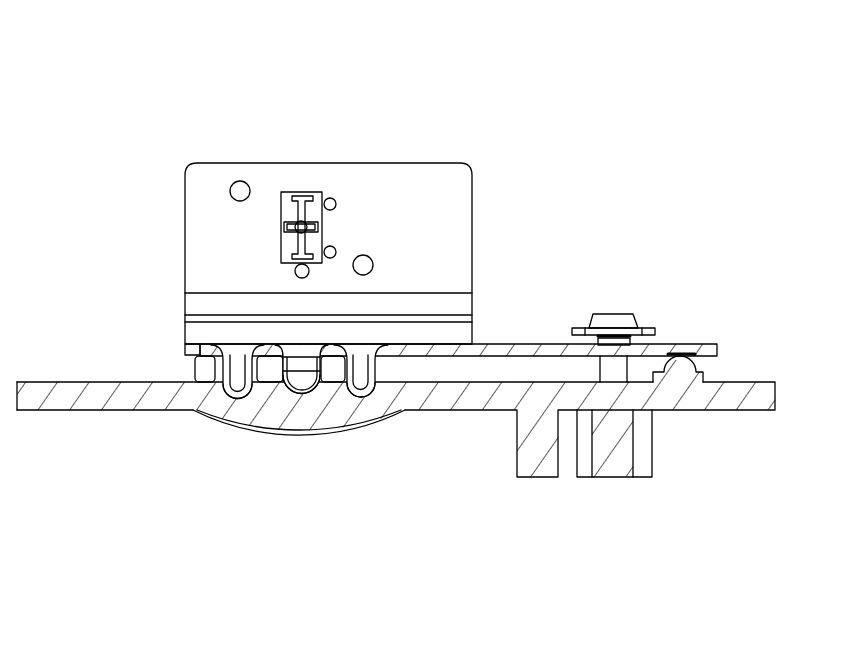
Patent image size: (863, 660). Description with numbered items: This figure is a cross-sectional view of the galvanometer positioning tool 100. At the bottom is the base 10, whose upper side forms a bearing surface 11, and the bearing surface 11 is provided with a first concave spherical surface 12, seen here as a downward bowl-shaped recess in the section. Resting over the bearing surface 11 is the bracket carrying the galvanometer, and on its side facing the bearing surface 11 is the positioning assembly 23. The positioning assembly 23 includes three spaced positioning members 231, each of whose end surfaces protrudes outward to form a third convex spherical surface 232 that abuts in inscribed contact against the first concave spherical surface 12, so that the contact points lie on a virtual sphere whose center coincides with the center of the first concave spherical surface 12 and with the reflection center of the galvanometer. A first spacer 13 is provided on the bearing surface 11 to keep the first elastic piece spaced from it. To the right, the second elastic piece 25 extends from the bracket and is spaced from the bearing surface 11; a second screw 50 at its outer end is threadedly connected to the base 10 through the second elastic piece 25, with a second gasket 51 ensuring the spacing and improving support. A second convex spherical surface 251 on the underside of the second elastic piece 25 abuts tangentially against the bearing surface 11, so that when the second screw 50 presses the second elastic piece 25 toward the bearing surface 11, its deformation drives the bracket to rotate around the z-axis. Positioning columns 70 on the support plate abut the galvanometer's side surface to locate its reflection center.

The galvanometer positioning tool 100 is at (65, 31).
The base 10 is at (98, 411).
The bearing surface 11 is at (42, 386).
The first concave spherical surface 12 is at (208, 265).
The first spacer 13 is at (202, 350).
The positioning assembly 23 is at (299, 288).
The positioning member 231 is at (230, 354).
The third convex spherical surface 232 is at (239, 397).
The second elastic piece 25 is at (572, 347).
The second convex spherical surface 251 is at (666, 369).
The second screw 50 is at (609, 325).
The second gasket 51 is at (653, 331).
The positioning column 70 is at (337, 205).